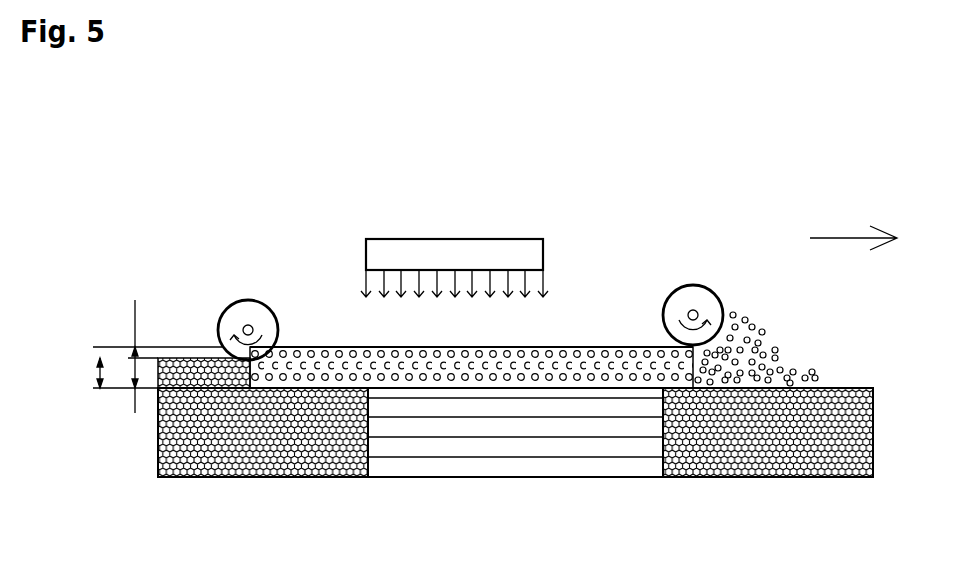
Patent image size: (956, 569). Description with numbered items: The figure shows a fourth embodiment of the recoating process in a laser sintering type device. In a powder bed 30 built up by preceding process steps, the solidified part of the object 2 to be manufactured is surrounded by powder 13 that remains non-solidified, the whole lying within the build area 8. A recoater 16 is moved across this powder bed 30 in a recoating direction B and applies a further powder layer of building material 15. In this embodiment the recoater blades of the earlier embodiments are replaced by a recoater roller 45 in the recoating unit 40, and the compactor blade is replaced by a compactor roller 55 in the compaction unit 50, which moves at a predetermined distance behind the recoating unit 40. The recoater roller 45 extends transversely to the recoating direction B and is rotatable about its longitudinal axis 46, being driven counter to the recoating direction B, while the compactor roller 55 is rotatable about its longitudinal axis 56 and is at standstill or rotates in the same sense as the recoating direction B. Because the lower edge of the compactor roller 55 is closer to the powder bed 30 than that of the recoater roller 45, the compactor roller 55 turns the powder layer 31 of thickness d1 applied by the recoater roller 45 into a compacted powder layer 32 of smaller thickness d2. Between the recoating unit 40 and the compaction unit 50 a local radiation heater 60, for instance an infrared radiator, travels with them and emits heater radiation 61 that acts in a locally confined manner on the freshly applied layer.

The object 2 is at (492, 447).
The powder 13 is at (233, 455).
The powder bed 30 is at (477, 470).
The powder layer 31 is at (358, 367).
The compacted powder layer 32 is at (207, 377).
The compactor roller 55 is at (234, 285).
The longitudinal axis 56 is at (250, 330).
The recoater roller 45 is at (713, 300).
The longitudinal axis 46 is at (697, 312).
The building material 15 is at (763, 372).
The build area 8 is at (838, 383).
The local radiation heater 60 is at (437, 253).
The heater radiation 61 is at (480, 300).
The recoater 16 is at (672, 192).
The compaction unit 50 is at (278, 217).
The recoating unit 40 is at (708, 216).
The thickness d1 is at (115, 370).
The thickness d2 is at (157, 356).
The recoating direction B is at (853, 221).